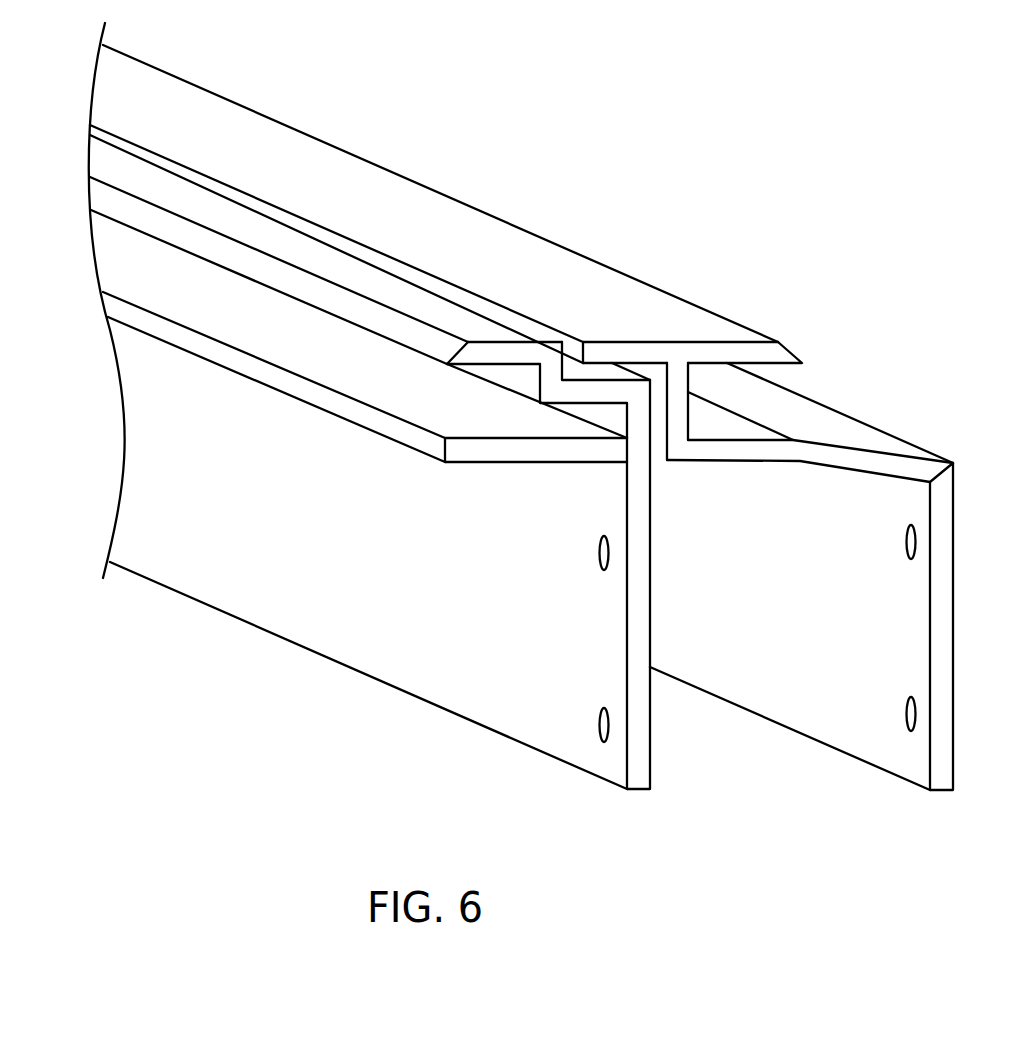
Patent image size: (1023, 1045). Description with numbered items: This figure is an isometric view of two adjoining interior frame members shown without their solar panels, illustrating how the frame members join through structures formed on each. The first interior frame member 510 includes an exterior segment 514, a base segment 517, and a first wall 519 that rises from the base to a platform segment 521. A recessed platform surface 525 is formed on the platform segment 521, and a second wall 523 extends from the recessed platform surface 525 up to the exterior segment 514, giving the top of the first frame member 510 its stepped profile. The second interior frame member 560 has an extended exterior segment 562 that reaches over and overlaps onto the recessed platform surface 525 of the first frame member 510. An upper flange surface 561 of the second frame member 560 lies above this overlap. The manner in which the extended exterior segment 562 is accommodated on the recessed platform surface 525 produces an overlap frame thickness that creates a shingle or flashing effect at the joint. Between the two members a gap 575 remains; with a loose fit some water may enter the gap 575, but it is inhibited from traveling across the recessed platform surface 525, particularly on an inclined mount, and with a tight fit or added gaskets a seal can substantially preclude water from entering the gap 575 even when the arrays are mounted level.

The first interior frame member 510 is at (394, 414).
The exterior segment 514 is at (403, 295).
The base segment 517 is at (465, 433).
The first wall 519 is at (638, 430).
The platform segment 521 is at (588, 392).
The second wall 523 is at (553, 375).
The recessed platform surface 525 is at (618, 372).
The second interior frame member 560 is at (535, 417).
The top flange of second panel 561 is at (502, 237).
The extended exterior segment 562 is at (678, 362).
The gap 575 is at (595, 352).